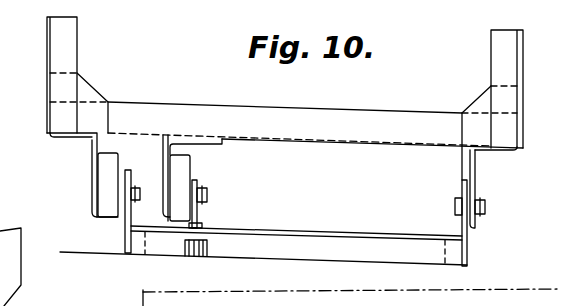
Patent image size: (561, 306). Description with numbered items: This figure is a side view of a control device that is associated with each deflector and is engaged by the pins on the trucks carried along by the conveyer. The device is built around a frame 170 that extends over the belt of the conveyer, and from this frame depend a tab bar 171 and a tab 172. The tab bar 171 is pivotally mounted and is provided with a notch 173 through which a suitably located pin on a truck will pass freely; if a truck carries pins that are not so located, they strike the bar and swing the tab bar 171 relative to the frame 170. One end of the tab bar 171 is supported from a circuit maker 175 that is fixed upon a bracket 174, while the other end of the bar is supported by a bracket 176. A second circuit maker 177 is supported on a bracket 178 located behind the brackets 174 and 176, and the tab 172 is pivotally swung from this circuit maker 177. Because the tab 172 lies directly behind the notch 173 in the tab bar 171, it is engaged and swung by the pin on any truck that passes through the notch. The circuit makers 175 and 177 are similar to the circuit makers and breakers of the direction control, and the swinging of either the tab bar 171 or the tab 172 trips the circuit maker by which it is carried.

The frame 170 is at (246, 120).
The tab bar 171 is at (263, 245).
The tab 172 is at (196, 258).
The notch 173 is at (190, 258).
The bracket 174 is at (93, 142).
The circuit maker 175 is at (112, 213).
The bracket 176 is at (476, 169).
The second circuit maker 177 is at (182, 166).
The bracket 178 is at (165, 167).